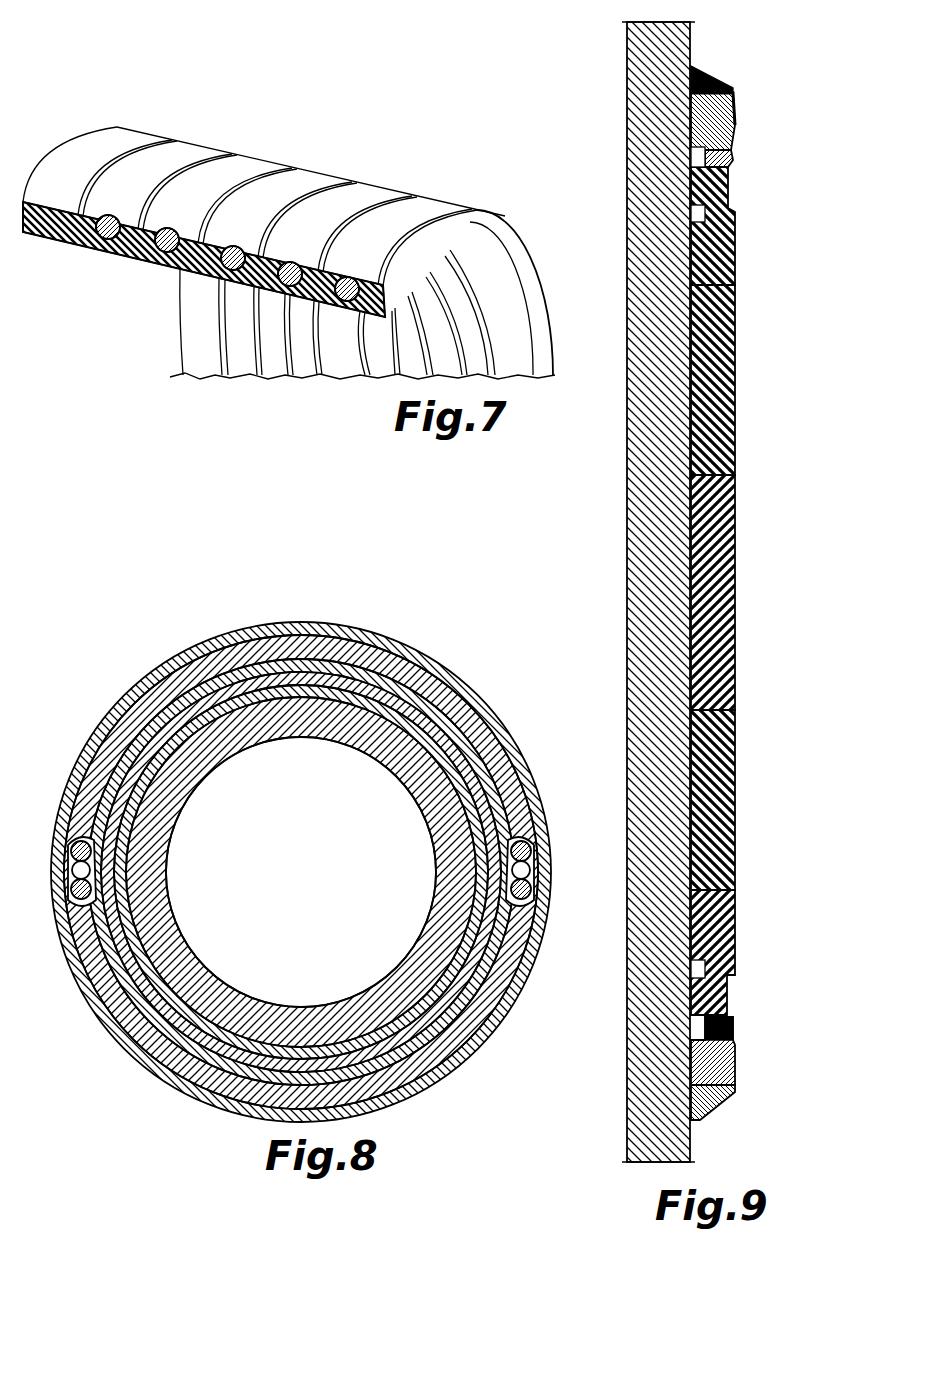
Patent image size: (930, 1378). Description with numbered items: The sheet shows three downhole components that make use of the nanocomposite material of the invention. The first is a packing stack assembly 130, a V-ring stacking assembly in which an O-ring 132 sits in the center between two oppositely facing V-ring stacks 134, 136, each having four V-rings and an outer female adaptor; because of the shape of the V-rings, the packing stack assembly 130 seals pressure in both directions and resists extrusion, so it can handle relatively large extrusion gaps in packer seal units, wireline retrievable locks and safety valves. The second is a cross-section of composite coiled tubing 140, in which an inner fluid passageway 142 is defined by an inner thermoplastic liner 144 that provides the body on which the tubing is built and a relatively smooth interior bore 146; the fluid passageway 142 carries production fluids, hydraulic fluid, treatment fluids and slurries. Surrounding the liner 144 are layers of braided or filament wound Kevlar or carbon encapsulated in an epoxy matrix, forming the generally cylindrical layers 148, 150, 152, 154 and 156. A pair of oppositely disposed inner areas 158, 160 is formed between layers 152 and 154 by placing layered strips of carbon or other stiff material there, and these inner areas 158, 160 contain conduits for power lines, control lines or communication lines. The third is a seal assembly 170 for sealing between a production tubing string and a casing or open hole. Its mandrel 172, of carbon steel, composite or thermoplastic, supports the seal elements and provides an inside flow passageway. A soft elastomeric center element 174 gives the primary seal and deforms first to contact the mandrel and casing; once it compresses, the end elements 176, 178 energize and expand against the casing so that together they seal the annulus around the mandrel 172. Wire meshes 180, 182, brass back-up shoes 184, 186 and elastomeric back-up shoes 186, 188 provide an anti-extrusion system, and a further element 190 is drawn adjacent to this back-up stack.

In FIG. 7, the packing stack assembly 130 is at (438, 122).
In FIG. 7, the O-ring 132 is at (190, 268).
In FIG. 7, the V-ring stack 134 is at (93, 213).
In FIG. 7, the V-ring stack 136 is at (322, 276).
In FIG. 8, the composite coiled tubing 140 is at (437, 624).
In FIG. 8, the inner fluid passageway 142 is at (306, 872).
In FIG. 8, the inner thermoplastic liner 144 is at (200, 775).
In FIG. 8, the interior bore 146 is at (220, 955).
In FIG. 8, the layer 148 is at (487, 708).
In FIG. 8, the layer 150 is at (457, 690).
In FIG. 8, the layer 152 is at (440, 670).
In FIG. 8, the layer 154 is at (296, 627).
In FIG. 8, the layer 156 is at (186, 640).
In FIG. 8, the inner area 158 is at (75, 840).
In FIG. 8, the inner area 160 is at (525, 838).
In FIG. 9, the seal assembly 170 is at (722, 36).
In FIG. 9, the mandrel 172 is at (640, 130).
In FIG. 9, the center element 174 is at (736, 590).
In FIG. 9, the end element 176 is at (736, 800).
In FIG. 9, the end element 178 is at (736, 380).
In FIG. 9, the wire mesh 180 is at (736, 125).
In FIG. 9, the wire mesh 182 is at (736, 1060).
In FIG. 9, the brass back-up shoe 184 is at (736, 162).
In FIG. 9, the back-up shoe 186 is at (736, 1022).
In FIG. 9, the elastomeric back-up shoe 188 is at (736, 258).
In FIG. 9, the body segment 190 is at (736, 928).